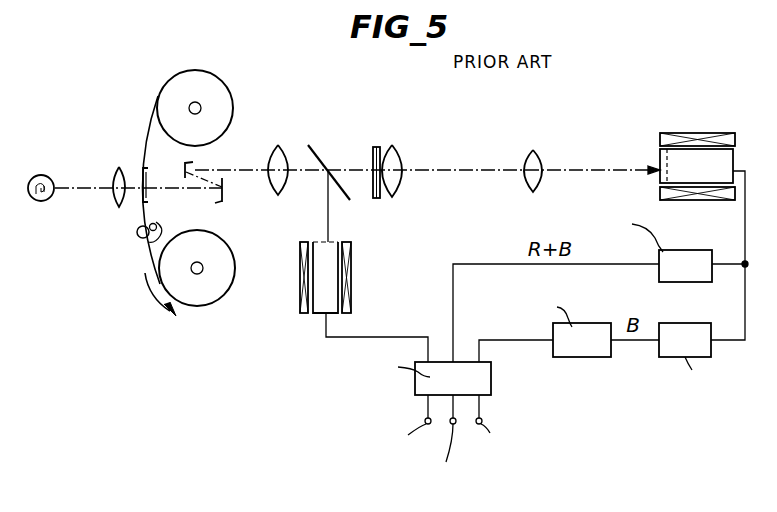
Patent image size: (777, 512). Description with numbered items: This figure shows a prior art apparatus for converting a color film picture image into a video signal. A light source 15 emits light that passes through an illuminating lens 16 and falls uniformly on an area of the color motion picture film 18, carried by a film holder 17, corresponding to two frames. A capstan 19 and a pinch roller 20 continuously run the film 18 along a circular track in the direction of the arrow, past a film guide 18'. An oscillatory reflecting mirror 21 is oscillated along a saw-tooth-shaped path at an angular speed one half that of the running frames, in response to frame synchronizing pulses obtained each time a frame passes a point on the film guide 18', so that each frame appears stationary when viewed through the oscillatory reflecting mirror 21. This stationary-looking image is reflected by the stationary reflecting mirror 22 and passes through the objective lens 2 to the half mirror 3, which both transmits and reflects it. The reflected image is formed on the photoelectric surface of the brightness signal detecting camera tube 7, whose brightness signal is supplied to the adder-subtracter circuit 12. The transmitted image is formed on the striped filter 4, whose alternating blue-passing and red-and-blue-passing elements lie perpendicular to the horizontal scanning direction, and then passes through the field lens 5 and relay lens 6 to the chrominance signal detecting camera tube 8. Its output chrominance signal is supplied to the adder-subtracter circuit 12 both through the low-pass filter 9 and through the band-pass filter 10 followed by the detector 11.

The objective lens 2 is at (276, 146).
The half mirror 3 is at (312, 149).
The striped filter 4 is at (375, 147).
The field lens 5 is at (396, 148).
The relay lens 6 is at (530, 150).
The brightness signal detecting camera tube 7 is at (352, 245).
The chrominance signal detecting camera tube 8 is at (673, 133).
The low-pass filter 9 is at (693, 252).
The band-pass filter 10 is at (697, 328).
The detector 11 is at (570, 348).
The adder-subtracter circuit 12 is at (491, 378).
The light source 15 is at (41, 175).
The illuminating lens 16 is at (118, 170).
The film holder 17 is at (208, 77).
The color motion picture film 18 is at (140, 181).
The film guide 18' is at (173, 198).
The capstan 19 is at (137, 232).
The pinch roller 20 is at (148, 242).
The oscillatory reflecting mirror 21 is at (223, 201).
The stationary reflecting mirror 22 is at (192, 166).